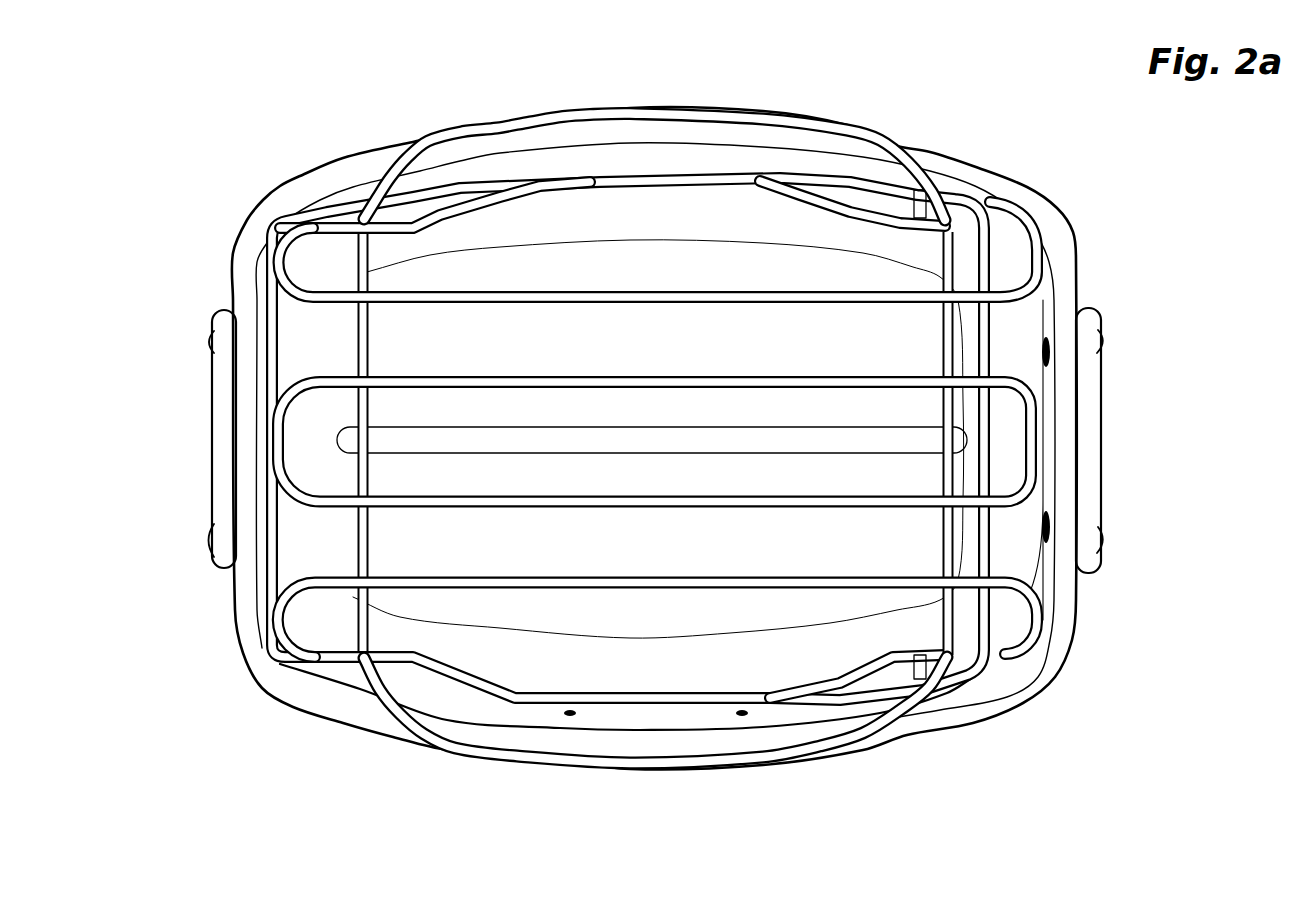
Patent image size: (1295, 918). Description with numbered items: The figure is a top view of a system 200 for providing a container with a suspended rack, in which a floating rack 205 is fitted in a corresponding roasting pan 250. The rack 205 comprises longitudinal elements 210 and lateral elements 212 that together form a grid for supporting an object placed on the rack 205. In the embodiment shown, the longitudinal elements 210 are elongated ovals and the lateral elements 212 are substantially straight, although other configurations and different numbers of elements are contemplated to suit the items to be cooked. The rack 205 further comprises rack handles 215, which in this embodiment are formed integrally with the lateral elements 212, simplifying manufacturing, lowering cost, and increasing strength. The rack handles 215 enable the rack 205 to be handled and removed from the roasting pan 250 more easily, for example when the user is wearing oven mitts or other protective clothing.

The system 200 is at (627, 427).
The floating rack 205 is at (572, 438).
The longitudinal elements 210 is at (495, 290).
The lateral elements 212 is at (360, 562).
The rack handles 215 is at (678, 108).
The roasting pan 250 is at (1024, 188).